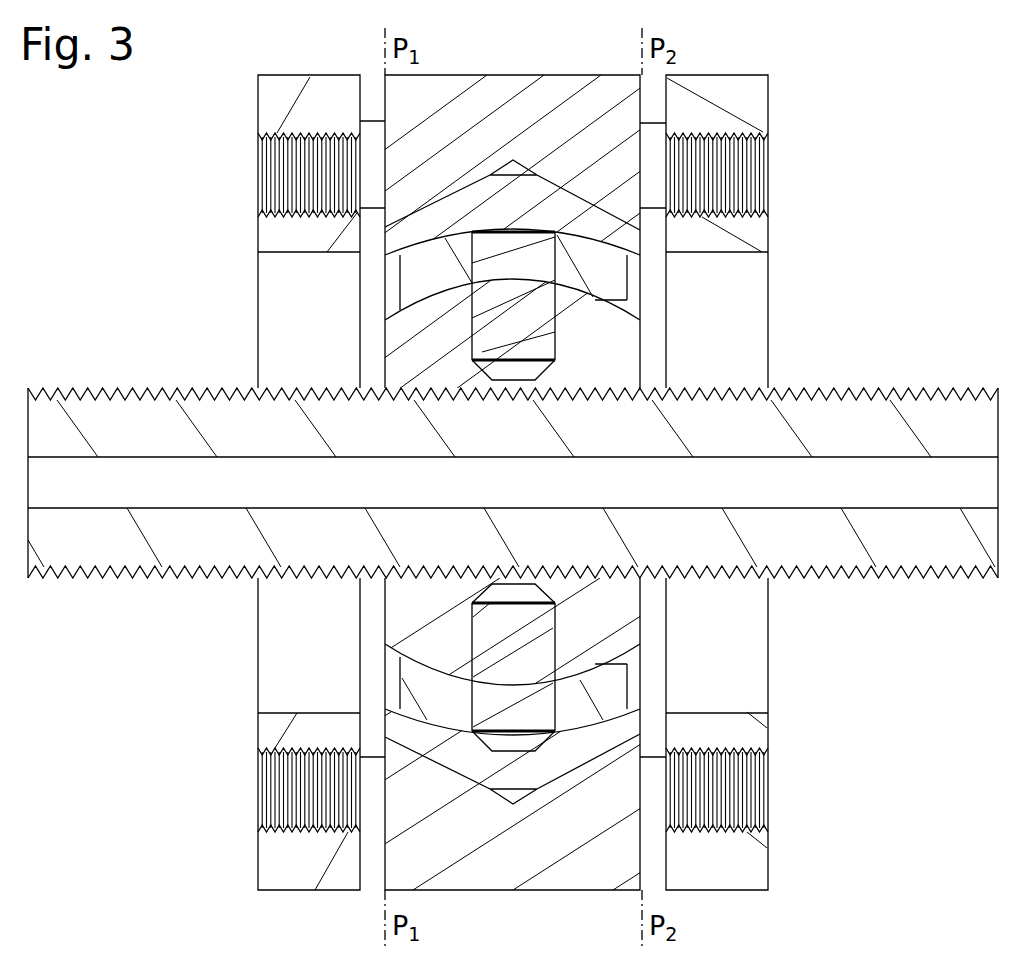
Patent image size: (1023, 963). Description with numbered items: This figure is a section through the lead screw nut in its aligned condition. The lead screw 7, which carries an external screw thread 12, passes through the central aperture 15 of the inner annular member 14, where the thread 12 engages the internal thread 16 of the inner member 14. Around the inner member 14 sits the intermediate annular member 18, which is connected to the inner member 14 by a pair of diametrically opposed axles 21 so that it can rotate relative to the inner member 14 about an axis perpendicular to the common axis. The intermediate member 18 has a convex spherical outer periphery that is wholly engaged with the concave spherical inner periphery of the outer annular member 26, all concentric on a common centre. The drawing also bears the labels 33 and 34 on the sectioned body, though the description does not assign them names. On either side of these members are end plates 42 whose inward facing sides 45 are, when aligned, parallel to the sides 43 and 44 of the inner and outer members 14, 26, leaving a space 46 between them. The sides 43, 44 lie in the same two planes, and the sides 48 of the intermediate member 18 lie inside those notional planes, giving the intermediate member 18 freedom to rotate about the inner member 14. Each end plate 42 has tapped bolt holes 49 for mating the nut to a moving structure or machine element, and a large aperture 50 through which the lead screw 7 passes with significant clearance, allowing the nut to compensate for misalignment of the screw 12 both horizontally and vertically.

The lead screw 7 is at (113, 415).
The external screw thread 12 is at (53, 392).
The inner annular member 14 is at (627, 366).
The central aperture 15 is at (640, 580).
The internal thread 16 is at (400, 580).
The intermediate annular member 18 is at (415, 275).
The axles 21 is at (490, 345).
The outer annular member 26 is at (430, 215).
The wedge surface 33 is at (537, 186).
The block body 34 is at (447, 102).
The end plates 42 is at (273, 93).
The side of inner member 43 is at (385, 335).
The side of outer member 44 is at (385, 121).
The inward facing sides 45 is at (363, 100).
The space 46 is at (367, 243).
The sides of intermediate member 48 is at (628, 292).
The tapped bolt holes 49 is at (768, 134).
The large aperture 50 is at (258, 648).